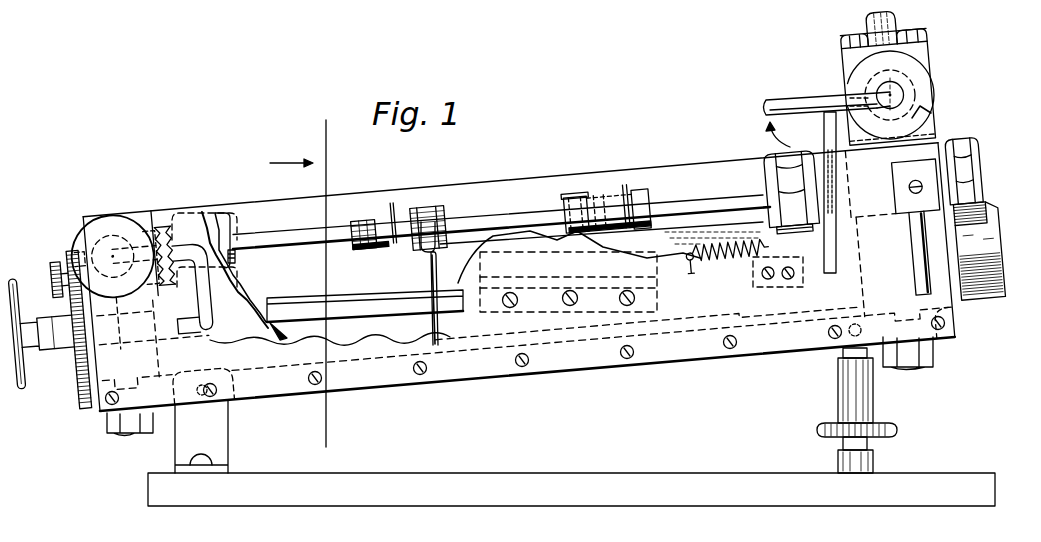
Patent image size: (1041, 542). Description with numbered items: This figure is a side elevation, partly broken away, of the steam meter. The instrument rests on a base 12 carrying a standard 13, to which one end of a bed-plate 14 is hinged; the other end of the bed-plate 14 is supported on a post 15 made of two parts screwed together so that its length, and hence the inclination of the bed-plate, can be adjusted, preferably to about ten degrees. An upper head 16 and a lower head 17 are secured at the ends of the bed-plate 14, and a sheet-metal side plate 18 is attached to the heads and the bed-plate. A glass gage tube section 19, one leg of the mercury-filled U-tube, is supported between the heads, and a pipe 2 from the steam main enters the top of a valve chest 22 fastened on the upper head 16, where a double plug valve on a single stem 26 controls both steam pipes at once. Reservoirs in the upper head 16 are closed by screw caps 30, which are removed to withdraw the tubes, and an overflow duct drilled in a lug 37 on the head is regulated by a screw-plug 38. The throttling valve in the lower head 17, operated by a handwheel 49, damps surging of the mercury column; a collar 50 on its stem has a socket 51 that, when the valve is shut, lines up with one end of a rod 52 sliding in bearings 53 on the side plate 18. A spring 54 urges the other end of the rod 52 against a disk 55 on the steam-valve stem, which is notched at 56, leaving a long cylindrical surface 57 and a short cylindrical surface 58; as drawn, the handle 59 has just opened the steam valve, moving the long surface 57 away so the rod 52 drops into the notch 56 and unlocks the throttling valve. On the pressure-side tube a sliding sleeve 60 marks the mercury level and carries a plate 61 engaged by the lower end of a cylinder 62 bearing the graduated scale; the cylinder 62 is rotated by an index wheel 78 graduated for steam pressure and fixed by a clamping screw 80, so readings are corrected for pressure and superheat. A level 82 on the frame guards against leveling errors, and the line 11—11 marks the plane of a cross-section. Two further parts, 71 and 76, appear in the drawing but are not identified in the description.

The pipe 2 is at (866, 22).
The section line 11 is at (302, 283).
The base 12 is at (520, 478).
The standard 13 is at (217, 438).
The bed-plate 14 is at (371, 393).
The post 15 is at (874, 413).
The upper head 16 is at (960, 275).
The lower head 17 is at (88, 213).
The side plate 18 is at (462, 182).
The gage tube section 19 is at (283, 236).
The valve chest 22 is at (928, 60).
The stem 26 is at (905, 97).
The screw cap 30 is at (972, 173).
The lug 37 is at (893, 172).
The screw-plug 38 is at (908, 189).
The handwheel 49 is at (150, 216).
The collar 50 is at (112, 254).
The socket 51 is at (134, 319).
The rod 52 is at (197, 297).
The bearing 53 is at (270, 310).
The spring 54 is at (727, 248).
The disk 55 is at (847, 72).
The notch 56 is at (843, 93).
The long cylindrical surface 57 is at (924, 63).
The short cylindrical surface 58 is at (834, 128).
The handle 59 is at (773, 97).
The sleeve 60 is at (370, 249).
The plate 61 is at (430, 260).
The cylinder 62 is at (435, 263).
The pin 71 is at (397, 204).
The handle 76 is at (16, 280).
The index wheel 78 is at (75, 403).
The clamping screw 80 is at (55, 263).
The level 82 is at (612, 263).